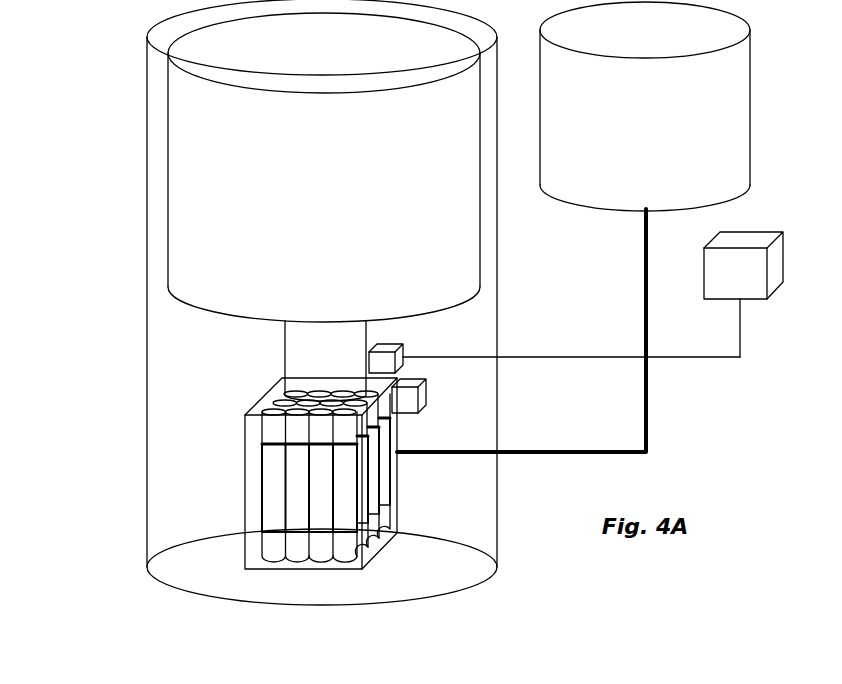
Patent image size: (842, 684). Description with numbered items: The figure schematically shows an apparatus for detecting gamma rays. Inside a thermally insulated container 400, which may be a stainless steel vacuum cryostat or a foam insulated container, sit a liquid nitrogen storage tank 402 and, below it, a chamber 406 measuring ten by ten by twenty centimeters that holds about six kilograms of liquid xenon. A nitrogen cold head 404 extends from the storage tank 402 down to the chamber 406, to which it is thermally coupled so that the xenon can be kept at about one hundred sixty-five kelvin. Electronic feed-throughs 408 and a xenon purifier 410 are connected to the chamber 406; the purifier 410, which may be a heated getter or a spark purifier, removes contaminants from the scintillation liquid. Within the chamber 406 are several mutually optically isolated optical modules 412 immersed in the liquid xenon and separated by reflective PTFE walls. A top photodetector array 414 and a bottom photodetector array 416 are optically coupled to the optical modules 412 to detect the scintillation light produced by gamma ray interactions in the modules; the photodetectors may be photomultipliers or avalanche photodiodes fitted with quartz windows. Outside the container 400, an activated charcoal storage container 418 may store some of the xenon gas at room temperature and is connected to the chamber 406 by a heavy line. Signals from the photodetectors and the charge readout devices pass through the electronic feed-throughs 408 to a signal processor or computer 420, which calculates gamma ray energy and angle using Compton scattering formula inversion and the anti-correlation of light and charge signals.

The thermally insulated container 400 is at (497, 298).
The liquid nitrogen storage tank 402 is at (302, 211).
The nitrogen cold head 404 is at (285, 345).
The chamber 406 is at (302, 569).
The electronic feed-throughs 408 is at (403, 348).
The xenon purifier 410 is at (426, 392).
The optical modules 412 is at (260, 487).
The top photodetector array 414 is at (262, 424).
The bottom photodetector array 416 is at (260, 545).
The activated charcoal storage container 418 is at (625, 135).
The signal processor or computer 420 is at (718, 291).